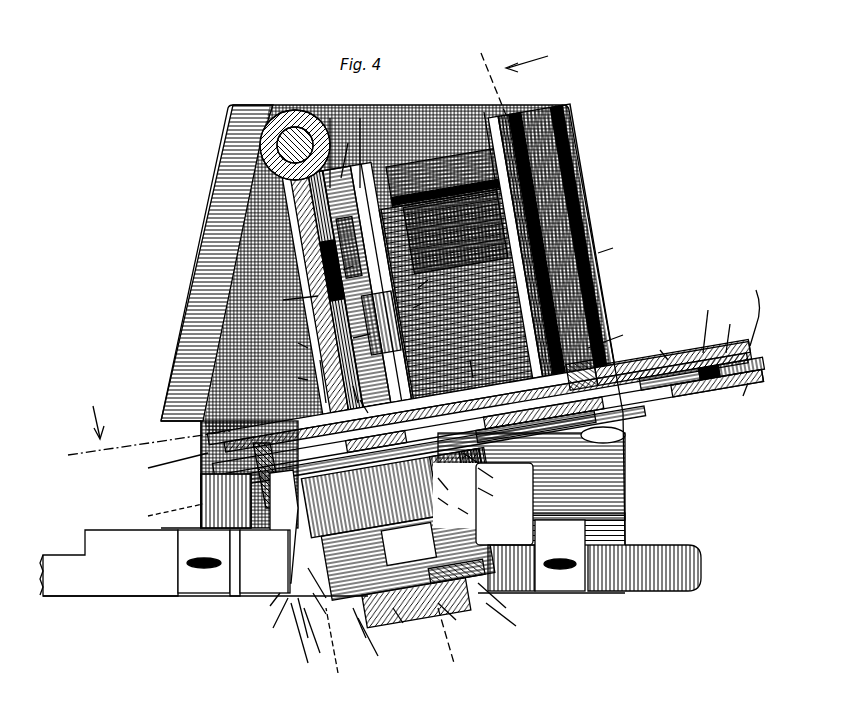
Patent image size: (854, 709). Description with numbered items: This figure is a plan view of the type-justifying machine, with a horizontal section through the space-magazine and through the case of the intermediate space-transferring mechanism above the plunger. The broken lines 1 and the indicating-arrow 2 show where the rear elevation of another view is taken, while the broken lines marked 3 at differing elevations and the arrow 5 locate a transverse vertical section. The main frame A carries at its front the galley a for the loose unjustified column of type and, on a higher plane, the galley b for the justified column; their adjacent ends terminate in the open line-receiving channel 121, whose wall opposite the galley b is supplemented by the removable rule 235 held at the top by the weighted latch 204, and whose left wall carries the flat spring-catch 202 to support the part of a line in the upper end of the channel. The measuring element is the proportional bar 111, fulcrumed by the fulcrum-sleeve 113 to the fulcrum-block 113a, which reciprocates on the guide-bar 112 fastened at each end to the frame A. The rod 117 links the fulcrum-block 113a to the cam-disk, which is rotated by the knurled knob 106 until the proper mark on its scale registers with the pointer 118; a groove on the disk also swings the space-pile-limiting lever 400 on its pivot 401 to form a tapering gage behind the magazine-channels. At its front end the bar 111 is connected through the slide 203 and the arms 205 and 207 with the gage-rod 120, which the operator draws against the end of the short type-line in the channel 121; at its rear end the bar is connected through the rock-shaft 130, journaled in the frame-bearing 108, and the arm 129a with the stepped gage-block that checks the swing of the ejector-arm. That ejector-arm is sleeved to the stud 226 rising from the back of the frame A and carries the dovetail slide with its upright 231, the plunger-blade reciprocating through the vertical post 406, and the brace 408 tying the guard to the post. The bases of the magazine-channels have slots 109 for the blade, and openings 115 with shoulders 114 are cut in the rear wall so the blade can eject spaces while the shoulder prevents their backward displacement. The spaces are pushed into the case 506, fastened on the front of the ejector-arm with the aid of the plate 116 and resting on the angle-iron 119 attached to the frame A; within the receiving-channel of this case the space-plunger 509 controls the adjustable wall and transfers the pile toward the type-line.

The section lines 1 is at (368, 390).
The indicating-arrow 2 is at (93, 414).
The broken section lines 3 is at (473, 357).
The indicating-arrow 5 is at (533, 57).
The main frame A is at (178, 341).
The galley for unjustified column a is at (694, 560).
The galley for justified column b is at (60, 547).
The knurled knob 106 is at (618, 428).
The frame-bearing 108 is at (449, 197).
The slots 109 is at (262, 561).
The proportional bar 111 is at (472, 361).
The guide-bar 112 is at (160, 465).
The fulcrum-sleeve 113 is at (317, 374).
The fulcrum-block 113a is at (351, 386).
The shoulder 114 is at (268, 520).
The openings 115 is at (261, 561).
The plate 116 is at (477, 516).
The rod 117 is at (500, 497).
The pointer 118 is at (500, 478).
The angle-iron 119 is at (545, 583).
The gage-rod 120 is at (230, 585).
The line-receiving channel 121 is at (310, 627).
The arm 129a is at (439, 305).
The rock-shaft 130 is at (358, 115).
The flat spring-catch 202 is at (290, 642).
The slide 203 is at (329, 592).
The weighted latch 204 is at (259, 606).
The arm 205 is at (200, 462).
The slide-arm 207 is at (332, 612).
The stud 226 is at (290, 104).
The upright 231 is at (322, 110).
The removable rule 235 is at (263, 619).
The space-pile-limiting lever 400 is at (195, 480).
The pivot 401 is at (155, 515).
The vertical post 406 is at (280, 378).
The brace 408 is at (330, 650).
The case 506 is at (514, 622).
The space-plunger 509 is at (505, 600).